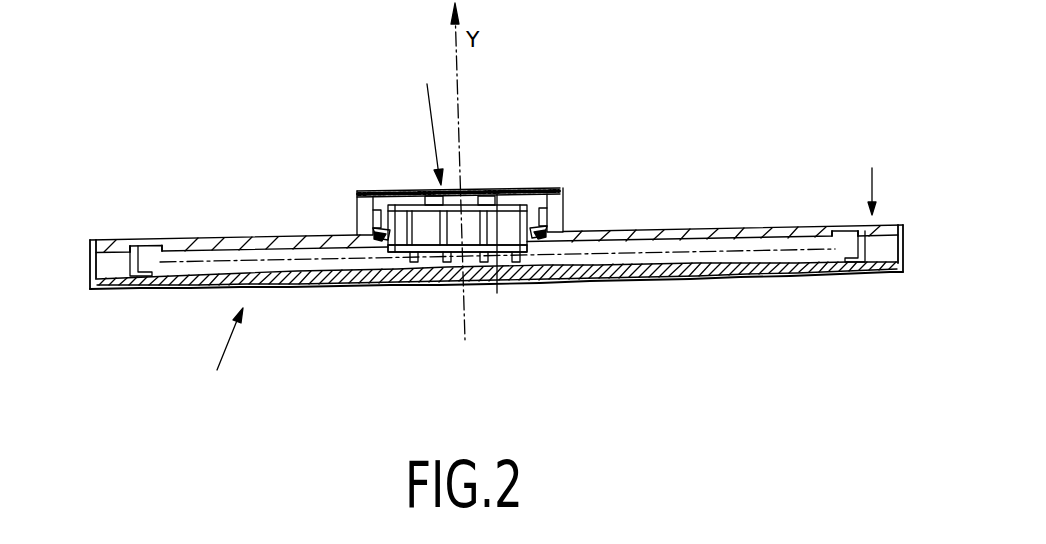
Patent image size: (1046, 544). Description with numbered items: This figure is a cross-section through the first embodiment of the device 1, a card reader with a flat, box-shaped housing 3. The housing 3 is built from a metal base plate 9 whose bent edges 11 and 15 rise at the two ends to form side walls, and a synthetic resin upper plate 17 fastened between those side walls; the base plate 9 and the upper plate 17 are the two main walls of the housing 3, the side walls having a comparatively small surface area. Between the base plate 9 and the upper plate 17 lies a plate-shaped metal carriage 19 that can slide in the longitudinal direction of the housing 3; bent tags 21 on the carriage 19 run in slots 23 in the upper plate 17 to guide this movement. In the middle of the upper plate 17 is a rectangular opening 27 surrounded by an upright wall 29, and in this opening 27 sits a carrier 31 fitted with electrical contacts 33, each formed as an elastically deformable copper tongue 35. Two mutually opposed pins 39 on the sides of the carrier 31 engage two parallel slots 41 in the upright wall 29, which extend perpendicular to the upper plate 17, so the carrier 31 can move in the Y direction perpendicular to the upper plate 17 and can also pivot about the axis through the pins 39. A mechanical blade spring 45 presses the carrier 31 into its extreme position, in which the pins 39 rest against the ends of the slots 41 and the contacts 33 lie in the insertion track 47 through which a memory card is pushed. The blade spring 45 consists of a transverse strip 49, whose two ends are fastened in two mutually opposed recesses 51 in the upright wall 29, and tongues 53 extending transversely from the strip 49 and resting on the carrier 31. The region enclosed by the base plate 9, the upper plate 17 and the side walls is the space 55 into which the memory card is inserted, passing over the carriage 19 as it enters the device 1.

The device 1 is at (220, 379).
The housing 3 is at (893, 187).
The base plate 9 is at (346, 289).
The bent edge 11 is at (904, 248).
The bent edge 15 is at (91, 262).
The upper plate 17 is at (663, 236).
The carriage 19 is at (628, 274).
The bent tags 21 is at (133, 268).
The slots 23 is at (153, 240).
The rectangular opening 27 is at (403, 190).
The upright wall 29 is at (560, 197).
The carrier 31 is at (467, 200).
The electrical contacts 33 is at (415, 287).
The copper tongue 35 is at (441, 287).
The pins 39 is at (378, 236).
The slots 41 is at (373, 230).
The mechanical blade spring 45 is at (440, 80).
The insertion track 47 is at (704, 276).
The transverse strip 49 is at (524, 194).
The recesses 51 is at (368, 190).
The tongues 53 is at (490, 188).
The space 55 is at (724, 248).